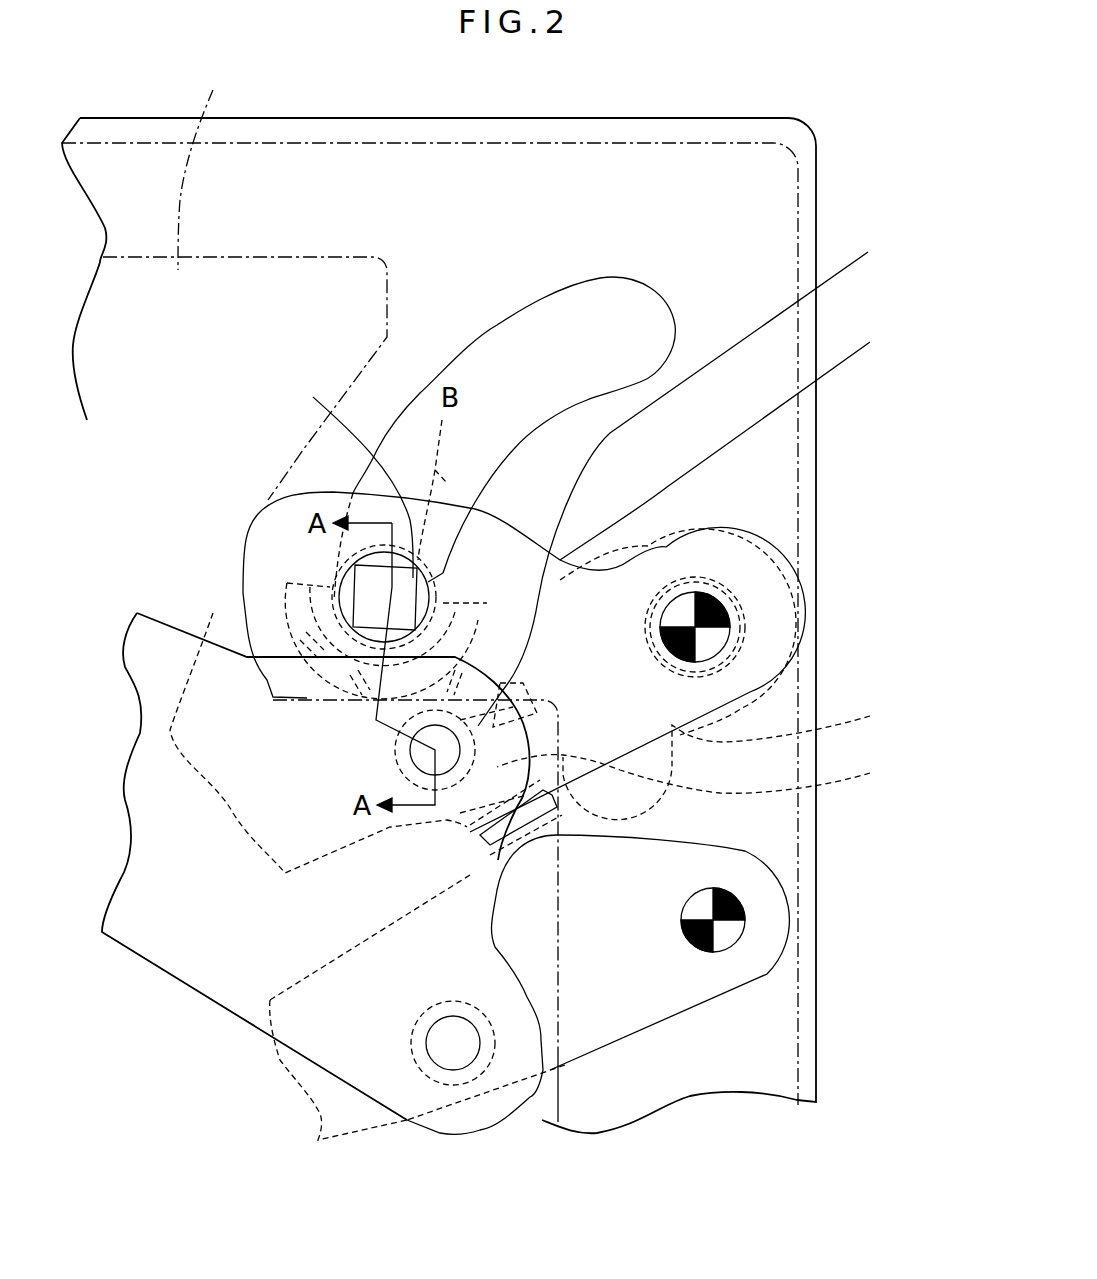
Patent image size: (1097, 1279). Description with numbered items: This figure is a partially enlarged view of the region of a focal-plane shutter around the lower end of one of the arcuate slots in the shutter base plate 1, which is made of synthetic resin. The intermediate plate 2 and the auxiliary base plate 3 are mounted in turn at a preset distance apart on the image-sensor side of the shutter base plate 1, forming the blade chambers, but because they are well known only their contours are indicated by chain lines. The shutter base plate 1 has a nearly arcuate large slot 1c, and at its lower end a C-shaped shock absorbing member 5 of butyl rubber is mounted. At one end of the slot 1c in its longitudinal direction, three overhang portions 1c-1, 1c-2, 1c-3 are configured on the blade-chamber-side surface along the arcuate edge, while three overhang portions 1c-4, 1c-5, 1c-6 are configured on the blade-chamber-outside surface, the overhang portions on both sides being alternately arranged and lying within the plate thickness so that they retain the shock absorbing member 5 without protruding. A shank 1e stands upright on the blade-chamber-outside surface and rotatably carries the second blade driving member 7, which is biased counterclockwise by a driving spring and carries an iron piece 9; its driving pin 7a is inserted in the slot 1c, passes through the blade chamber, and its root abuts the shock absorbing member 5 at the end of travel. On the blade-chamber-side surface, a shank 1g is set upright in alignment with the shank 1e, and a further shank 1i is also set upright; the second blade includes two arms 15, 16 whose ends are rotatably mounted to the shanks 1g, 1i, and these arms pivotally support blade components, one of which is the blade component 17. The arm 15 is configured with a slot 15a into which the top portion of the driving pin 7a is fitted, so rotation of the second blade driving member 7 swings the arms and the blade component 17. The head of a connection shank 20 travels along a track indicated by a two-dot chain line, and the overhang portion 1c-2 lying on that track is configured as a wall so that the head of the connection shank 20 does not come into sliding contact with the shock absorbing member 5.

The shutter base plate 1 is at (567, 133).
The intermediate plate 2 is at (202, 164).
The auxiliary base plate 3 is at (698, 157).
The shock absorbing member 5 is at (292, 517).
The second blade driving member 7 is at (550, 743).
The driving pin 7a is at (343, 469).
The iron piece 9 is at (713, 764).
The arm 15 is at (672, 560).
The slot 15a is at (712, 475).
The arm 16 is at (690, 870).
The blade component 17 is at (227, 968).
The connection shank 20 is at (636, 438).
The slot 1c is at (527, 333).
The overhang portion 1c-1 is at (478, 628).
The overhang portion 1c-2 is at (408, 738).
The overhang portion 1c-3 is at (290, 650).
The overhang portion 1c-4 is at (523, 707).
The overhang portion 1c-5 is at (360, 665).
The overhang portion 1c-6 is at (285, 588).
The shank 1e is at (735, 603).
The shank 1g is at (713, 640).
The shank 1i is at (727, 930).